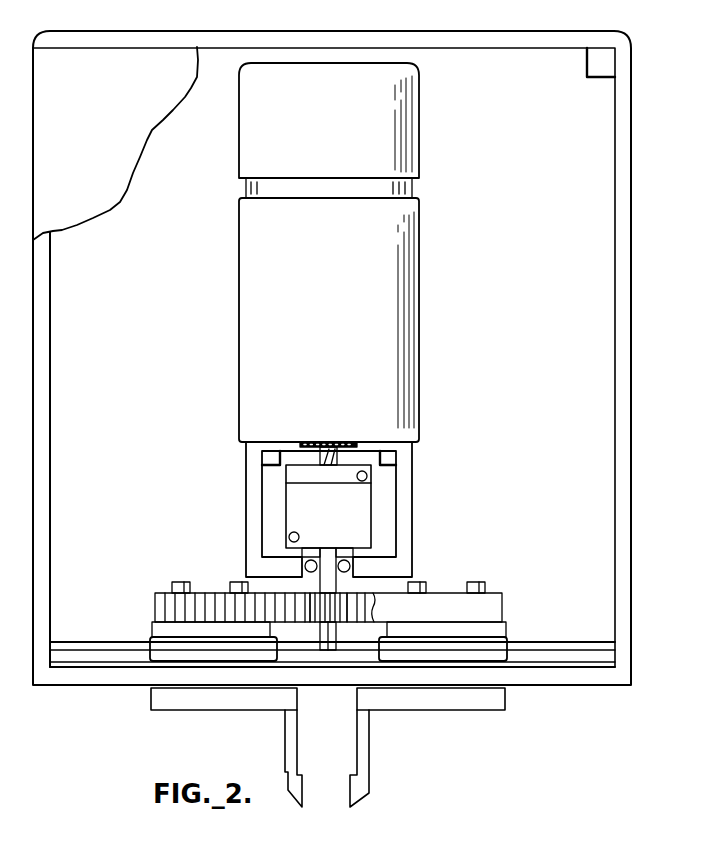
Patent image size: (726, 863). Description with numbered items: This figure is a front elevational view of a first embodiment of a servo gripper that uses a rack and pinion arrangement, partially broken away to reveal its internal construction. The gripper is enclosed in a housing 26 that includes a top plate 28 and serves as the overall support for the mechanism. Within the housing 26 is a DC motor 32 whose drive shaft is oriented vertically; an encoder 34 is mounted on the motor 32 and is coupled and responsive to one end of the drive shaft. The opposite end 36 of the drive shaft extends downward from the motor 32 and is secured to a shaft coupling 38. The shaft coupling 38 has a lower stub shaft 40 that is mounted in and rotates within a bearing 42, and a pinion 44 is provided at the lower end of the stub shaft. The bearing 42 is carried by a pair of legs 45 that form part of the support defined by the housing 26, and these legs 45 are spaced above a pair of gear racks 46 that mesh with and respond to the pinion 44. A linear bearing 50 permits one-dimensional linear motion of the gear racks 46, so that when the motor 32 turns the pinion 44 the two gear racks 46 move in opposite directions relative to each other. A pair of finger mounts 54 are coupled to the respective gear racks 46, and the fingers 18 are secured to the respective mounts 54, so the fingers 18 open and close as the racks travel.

The fingers 18 is at (285, 762).
The housing 26 is at (625, 133).
The top plate 28 is at (452, 14).
The DC motor 32 is at (403, 268).
The encoder 34 is at (404, 151).
The opposite end of the drive shaft 36 is at (330, 455).
The shaft coupling 38 is at (365, 512).
The lower stub shaft 40 is at (297, 553).
The bearing 42 is at (371, 549).
The pinion 44 is at (337, 625).
The legs 45 is at (276, 567).
The gear racks 46 is at (183, 607).
The linear bearing 50 is at (492, 655).
The finger mounts 54 is at (215, 702).